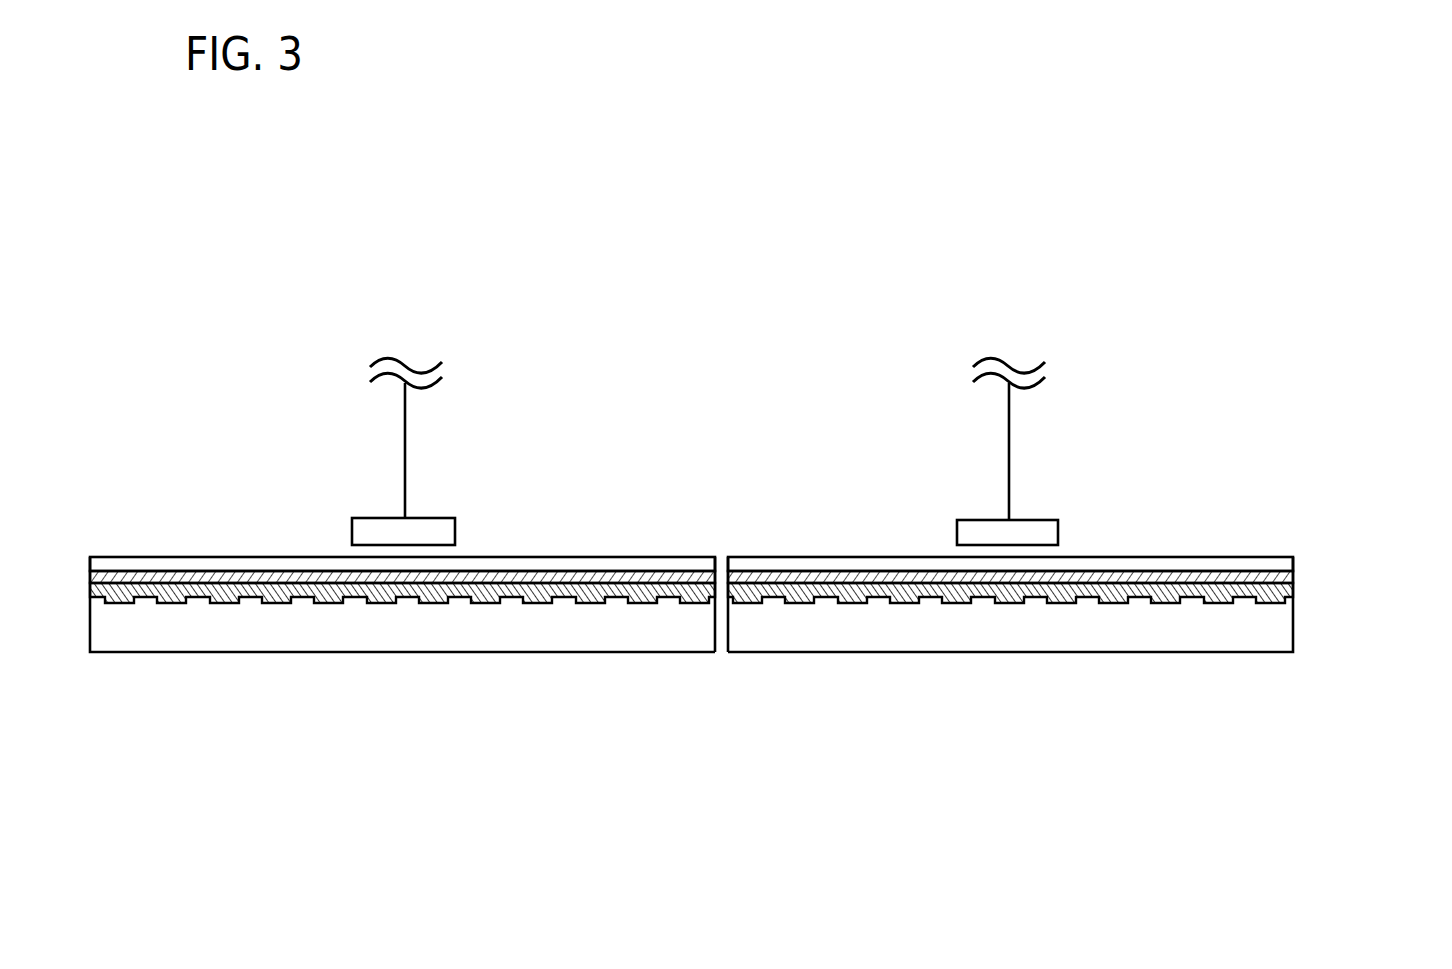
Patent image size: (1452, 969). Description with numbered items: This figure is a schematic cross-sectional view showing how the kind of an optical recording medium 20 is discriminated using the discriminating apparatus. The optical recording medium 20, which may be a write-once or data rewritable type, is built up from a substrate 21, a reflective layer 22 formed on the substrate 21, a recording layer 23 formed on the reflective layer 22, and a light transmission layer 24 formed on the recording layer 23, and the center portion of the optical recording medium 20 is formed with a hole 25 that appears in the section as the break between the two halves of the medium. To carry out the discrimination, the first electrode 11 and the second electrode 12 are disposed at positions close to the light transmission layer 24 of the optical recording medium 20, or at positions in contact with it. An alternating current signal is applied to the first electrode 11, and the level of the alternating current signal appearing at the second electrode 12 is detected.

The first electrode 11 is at (1043, 520).
The second electrode 12 is at (440, 518).
The optical recording medium 20 is at (1266, 265).
The substrate 21 is at (1237, 643).
The reflective layer 22 is at (1295, 606).
The recording layer 23 is at (1295, 578).
The light transmission layer 24 is at (1295, 563).
The hole 25 is at (722, 665).